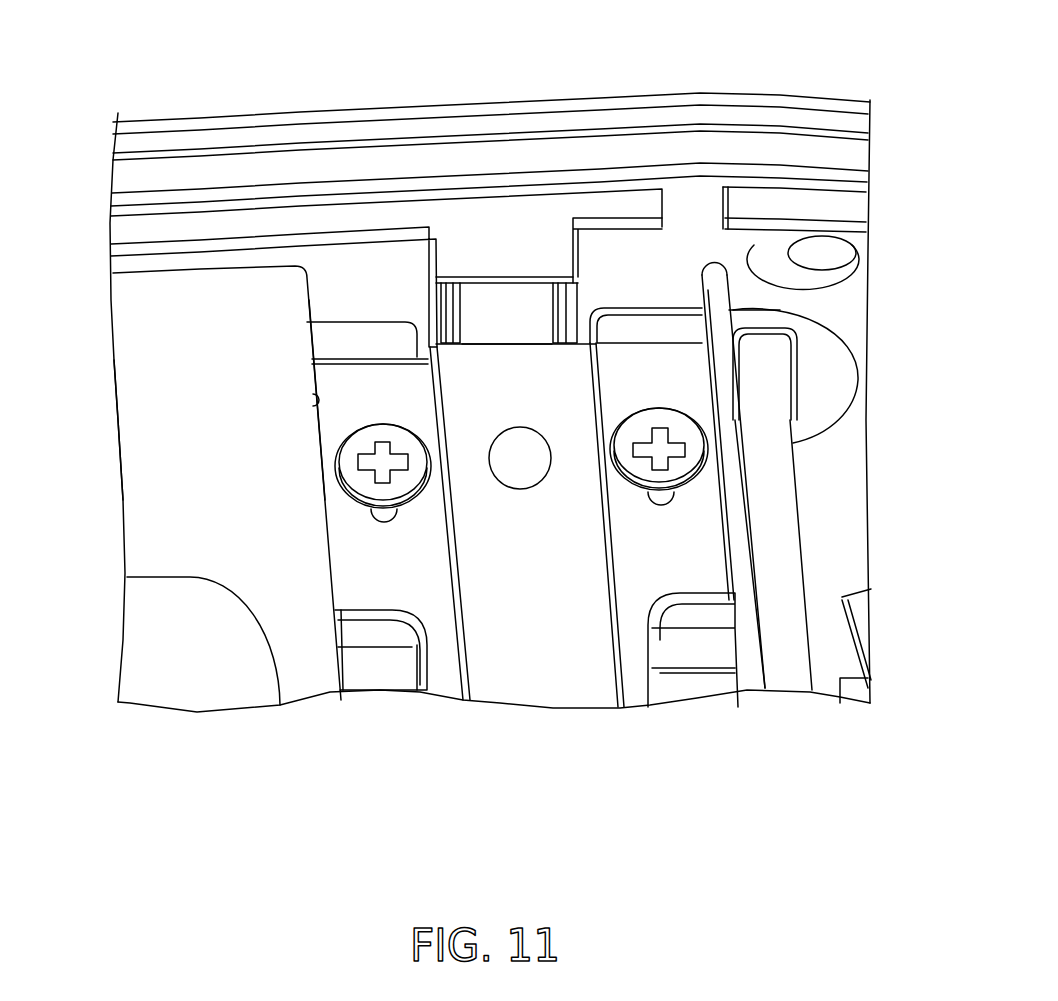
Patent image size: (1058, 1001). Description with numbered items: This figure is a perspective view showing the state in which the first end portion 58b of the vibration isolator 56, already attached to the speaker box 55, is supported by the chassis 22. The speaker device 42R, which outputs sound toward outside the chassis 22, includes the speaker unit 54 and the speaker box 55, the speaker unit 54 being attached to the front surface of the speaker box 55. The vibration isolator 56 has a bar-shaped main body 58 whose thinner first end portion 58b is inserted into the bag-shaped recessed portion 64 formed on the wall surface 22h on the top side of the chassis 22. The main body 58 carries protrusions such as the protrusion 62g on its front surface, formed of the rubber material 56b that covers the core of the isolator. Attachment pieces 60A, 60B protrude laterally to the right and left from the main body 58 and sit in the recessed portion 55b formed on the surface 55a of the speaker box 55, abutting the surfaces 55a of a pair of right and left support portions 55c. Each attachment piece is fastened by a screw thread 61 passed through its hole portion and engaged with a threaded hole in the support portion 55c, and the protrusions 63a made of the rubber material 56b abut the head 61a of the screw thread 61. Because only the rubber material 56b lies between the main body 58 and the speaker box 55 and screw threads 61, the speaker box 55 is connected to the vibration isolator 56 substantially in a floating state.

The chassis 22 is at (245, 107).
The wall surface on the top side of the chassis 22h is at (372, 262).
The bag-shaped recessed portion 64 is at (485, 285).
The first end portion 58b is at (520, 297).
The speaker box 55 is at (239, 483).
The surface of the speaker box 55a is at (322, 343).
The support portion 55c is at (291, 343).
The recessed portion 55b is at (313, 398).
The speaker device 42R is at (141, 465).
The speaker unit 54 is at (157, 697).
The attachment piece 60A is at (363, 594).
The vibration isolator 56 is at (566, 542).
The main body 58 is at (566, 542).
The rubber material 56b is at (585, 692).
The protrusion 62g is at (522, 441).
The screw thread 61 is at (564, 483).
The head of the screw thread 61a is at (564, 483).
The protrusion 63a is at (380, 513).
The attachment piece 60B is at (688, 568).